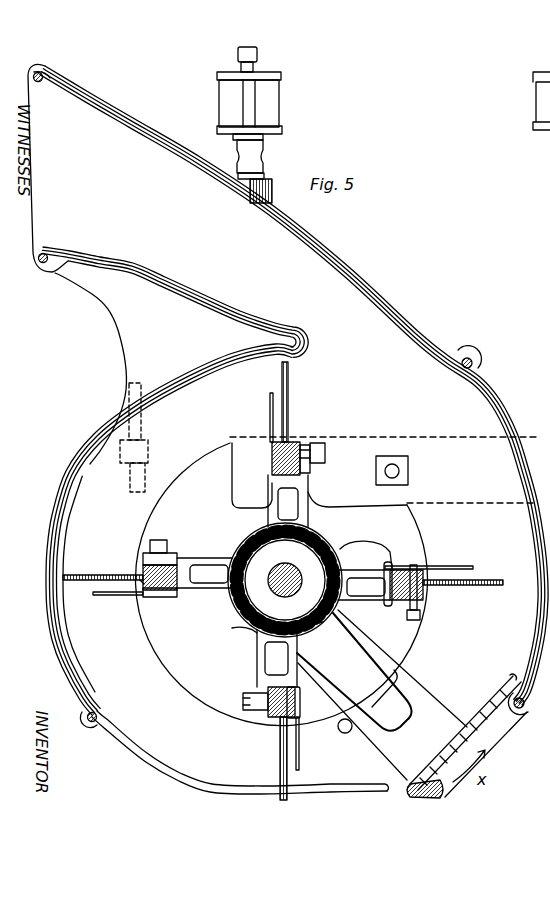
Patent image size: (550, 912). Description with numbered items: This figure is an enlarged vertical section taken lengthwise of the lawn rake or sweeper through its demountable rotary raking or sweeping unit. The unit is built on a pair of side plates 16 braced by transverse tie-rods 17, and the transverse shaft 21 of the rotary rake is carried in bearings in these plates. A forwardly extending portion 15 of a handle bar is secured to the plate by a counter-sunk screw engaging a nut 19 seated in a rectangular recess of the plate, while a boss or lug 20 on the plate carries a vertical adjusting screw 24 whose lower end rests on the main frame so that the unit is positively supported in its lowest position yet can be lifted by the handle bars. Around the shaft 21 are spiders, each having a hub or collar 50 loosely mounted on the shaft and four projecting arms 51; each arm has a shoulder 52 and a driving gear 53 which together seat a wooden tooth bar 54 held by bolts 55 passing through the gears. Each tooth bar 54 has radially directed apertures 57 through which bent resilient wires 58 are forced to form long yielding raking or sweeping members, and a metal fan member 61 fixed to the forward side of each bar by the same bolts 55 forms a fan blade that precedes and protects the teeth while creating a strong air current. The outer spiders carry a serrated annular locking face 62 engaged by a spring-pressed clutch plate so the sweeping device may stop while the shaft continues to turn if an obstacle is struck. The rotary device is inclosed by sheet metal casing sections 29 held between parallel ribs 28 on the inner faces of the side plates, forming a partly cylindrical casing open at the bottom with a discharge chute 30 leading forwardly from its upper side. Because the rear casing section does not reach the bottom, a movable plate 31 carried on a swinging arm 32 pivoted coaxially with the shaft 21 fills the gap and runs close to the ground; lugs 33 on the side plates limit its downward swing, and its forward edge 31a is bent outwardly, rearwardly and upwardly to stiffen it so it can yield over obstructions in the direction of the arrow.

The forwardly extending portions of the handle bars 15 is at (537, 437).
The side plates 16 is at (290, 387).
The transverse tie-rods 17 is at (470, 360).
The nut 19 is at (403, 468).
The boss or lug 20 is at (120, 458).
The shaft 21 is at (283, 581).
The adjusting screw 24 is at (127, 388).
The parallel ribs 28 is at (334, 252).
The sheet metal casing sections 29 is at (208, 329).
The discharge chute 30 is at (123, 150).
The movable plate 31 is at (498, 718).
The bent forward edge of the movable plate 31a is at (408, 790).
The swinging arm 32 is at (407, 670).
The stop lugs 33 is at (345, 733).
The hub or collar 50 is at (307, 560).
The projecting arms 51 is at (308, 492).
The shoulder 52 is at (278, 472).
The driving gear 53 is at (302, 447).
The tooth bars 54 is at (292, 442).
The bolts 55 is at (323, 453).
The apertures 57 is at (143, 582).
The wire raking or sweeping members 58 is at (288, 377).
The fan member 61 is at (270, 418).
The annular locking face 62 is at (332, 556).